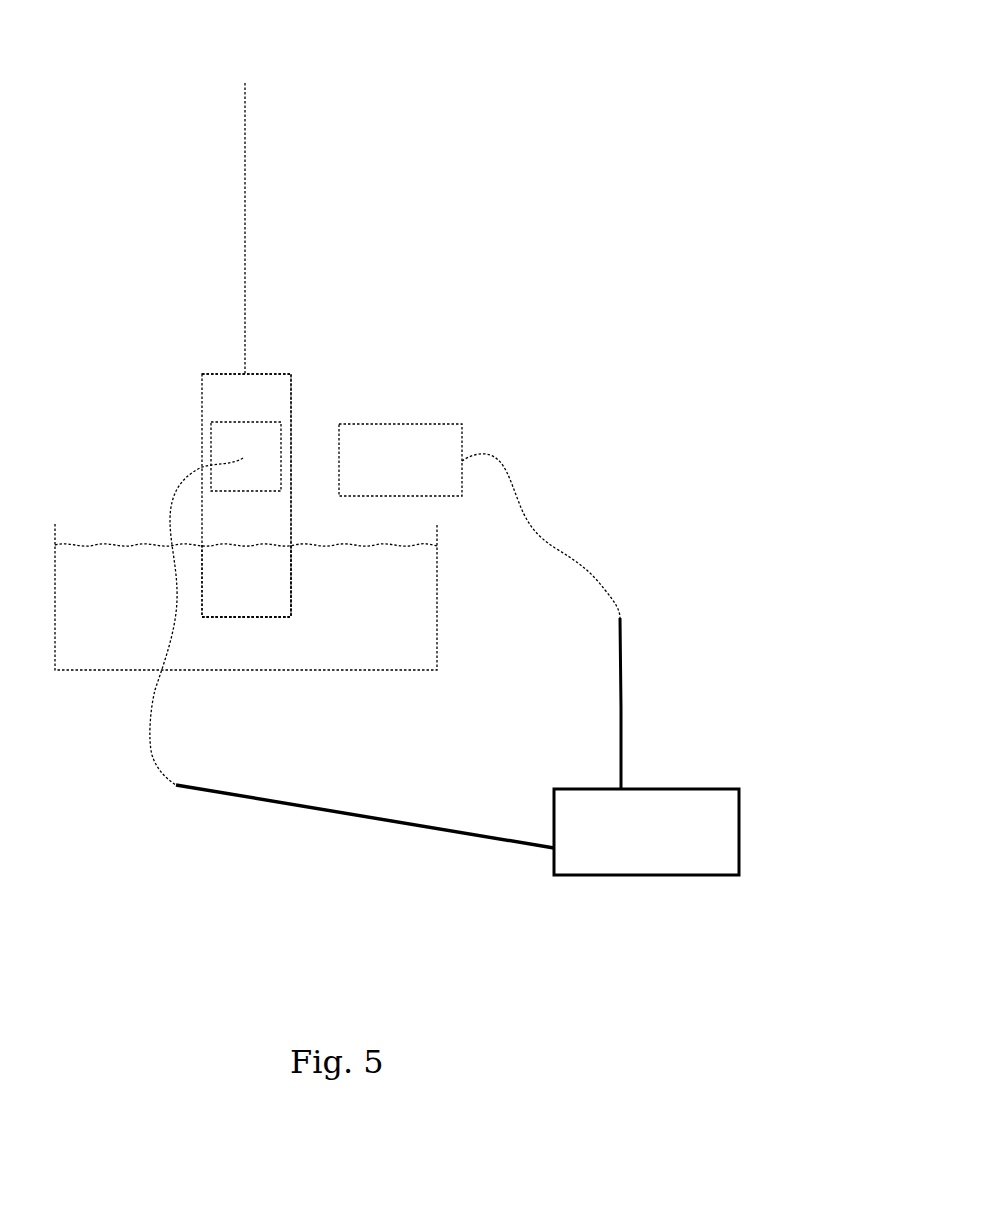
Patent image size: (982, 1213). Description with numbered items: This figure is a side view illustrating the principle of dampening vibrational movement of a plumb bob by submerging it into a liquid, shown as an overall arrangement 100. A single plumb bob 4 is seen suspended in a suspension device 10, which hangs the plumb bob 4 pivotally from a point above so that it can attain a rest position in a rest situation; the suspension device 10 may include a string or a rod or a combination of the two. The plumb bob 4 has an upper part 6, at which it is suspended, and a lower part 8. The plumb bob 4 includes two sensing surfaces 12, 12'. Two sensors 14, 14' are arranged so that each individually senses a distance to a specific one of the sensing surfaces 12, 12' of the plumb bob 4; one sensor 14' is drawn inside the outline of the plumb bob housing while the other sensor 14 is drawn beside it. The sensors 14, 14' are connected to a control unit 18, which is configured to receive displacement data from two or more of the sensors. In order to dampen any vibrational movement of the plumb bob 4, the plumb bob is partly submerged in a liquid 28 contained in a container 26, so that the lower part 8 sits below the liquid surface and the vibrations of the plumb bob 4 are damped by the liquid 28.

The sensor system 100 is at (507, 100).
The suspension device 10 is at (247, 132).
The plumb bob 4 is at (207, 399).
The upper part 6 is at (255, 393).
The sensing surface 12 is at (339, 462).
The sensing surface 12' is at (279, 564).
The lower part 8 is at (260, 592).
The sensor 14' is at (194, 603).
The sensor 14 is at (479, 478).
The control unit 18 is at (693, 789).
The container 26 is at (437, 643).
The liquid 28 is at (345, 652).